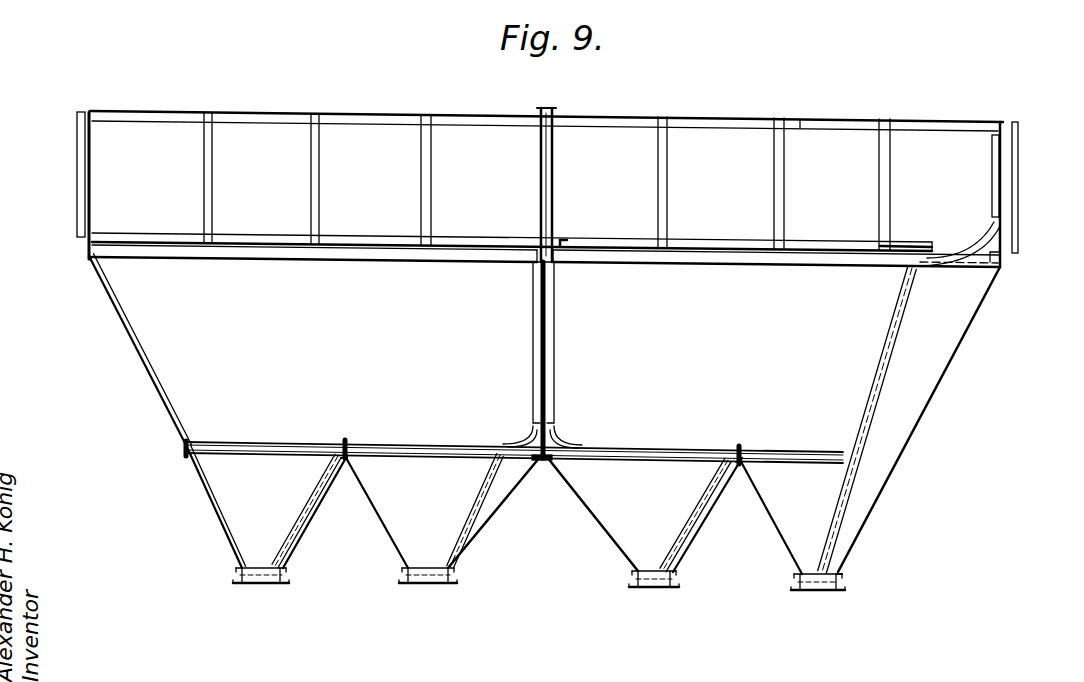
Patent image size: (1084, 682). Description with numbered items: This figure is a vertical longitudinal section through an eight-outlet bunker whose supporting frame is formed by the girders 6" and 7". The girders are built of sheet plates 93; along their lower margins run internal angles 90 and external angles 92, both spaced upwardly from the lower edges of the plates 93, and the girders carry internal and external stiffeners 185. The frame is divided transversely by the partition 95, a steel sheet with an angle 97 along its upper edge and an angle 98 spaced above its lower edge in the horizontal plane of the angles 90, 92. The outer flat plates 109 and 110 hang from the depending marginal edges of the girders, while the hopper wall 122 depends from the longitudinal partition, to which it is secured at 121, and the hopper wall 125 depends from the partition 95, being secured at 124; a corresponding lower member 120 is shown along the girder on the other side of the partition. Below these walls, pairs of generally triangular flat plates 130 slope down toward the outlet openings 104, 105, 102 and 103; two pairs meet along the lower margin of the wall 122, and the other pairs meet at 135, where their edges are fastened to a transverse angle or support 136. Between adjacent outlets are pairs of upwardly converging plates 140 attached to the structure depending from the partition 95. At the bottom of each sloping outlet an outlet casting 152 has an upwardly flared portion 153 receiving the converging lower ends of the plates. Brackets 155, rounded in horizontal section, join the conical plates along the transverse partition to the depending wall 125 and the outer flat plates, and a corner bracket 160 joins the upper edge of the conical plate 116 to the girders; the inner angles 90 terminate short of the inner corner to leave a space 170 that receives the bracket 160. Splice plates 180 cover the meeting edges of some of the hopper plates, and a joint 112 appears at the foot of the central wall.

The girder 6 is at (800, 121).
The girder 7 is at (80, 170).
The internal angle 90 is at (733, 108).
The external angle 92 is at (1003, 262).
The plate 93 is at (1002, 213).
The transverse partition 95 is at (540, 190).
The angle 97 is at (550, 111).
The angle 98 is at (566, 240).
The outlet opening 102 is at (661, 590).
The outlet opening 103 is at (812, 593).
The outlet opening 104 is at (266, 586).
The outlet opening 105 is at (428, 586).
The flat plate 109 is at (750, 355).
The flat plate 110 is at (183, 450).
The post base joint 112 is at (537, 466).
The conical plate 116 is at (932, 382).
The lower chord beam 120 is at (806, 273).
The securing point 121 is at (328, 270).
The hopper wall 122 is at (350, 355).
The securing point 124 is at (538, 265).
The hopper wall 125 is at (540, 339).
The flat plate 130 is at (373, 528).
The meeting line 135 is at (348, 463).
The transverse angle 136 is at (345, 441).
The upwardly converging plate 140 is at (561, 512).
The outlet casting 152 is at (841, 590).
The upwardly flared portion 153 is at (841, 578).
The bracket 155 is at (520, 438).
The corner bracket 160 is at (945, 252).
The space 170 is at (936, 248).
The splice plate 180 is at (301, 500).
The stiffener 185 is at (203, 158).